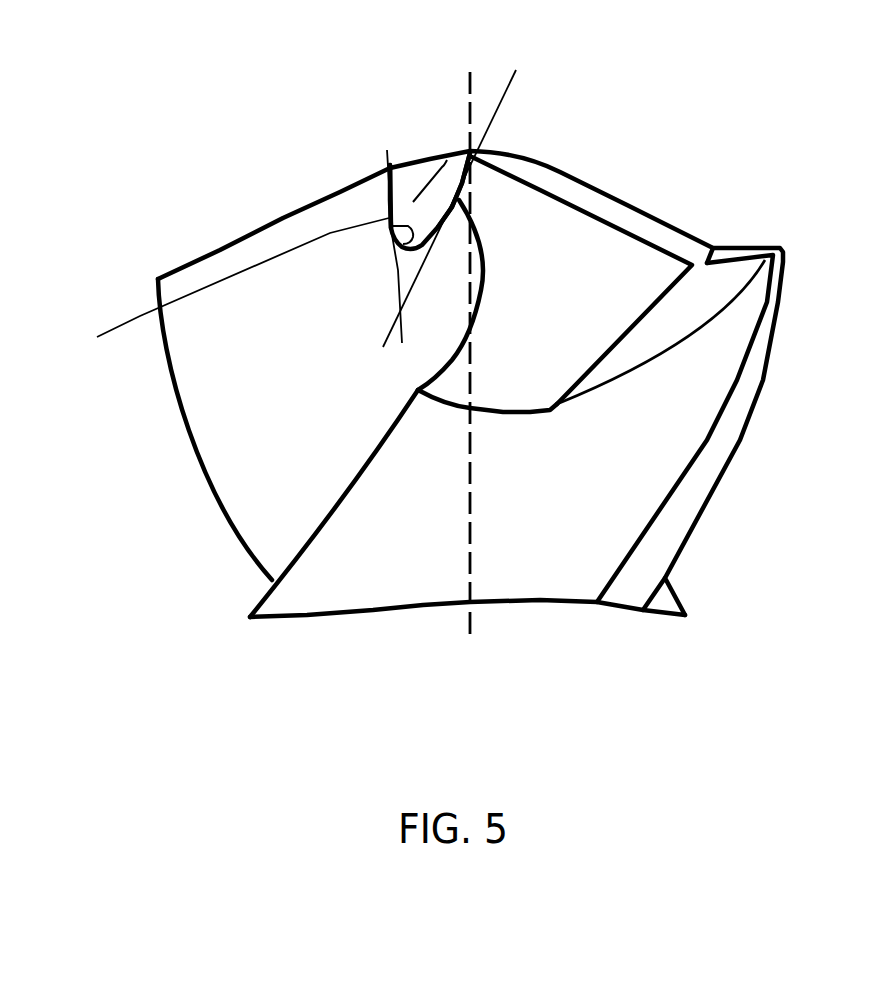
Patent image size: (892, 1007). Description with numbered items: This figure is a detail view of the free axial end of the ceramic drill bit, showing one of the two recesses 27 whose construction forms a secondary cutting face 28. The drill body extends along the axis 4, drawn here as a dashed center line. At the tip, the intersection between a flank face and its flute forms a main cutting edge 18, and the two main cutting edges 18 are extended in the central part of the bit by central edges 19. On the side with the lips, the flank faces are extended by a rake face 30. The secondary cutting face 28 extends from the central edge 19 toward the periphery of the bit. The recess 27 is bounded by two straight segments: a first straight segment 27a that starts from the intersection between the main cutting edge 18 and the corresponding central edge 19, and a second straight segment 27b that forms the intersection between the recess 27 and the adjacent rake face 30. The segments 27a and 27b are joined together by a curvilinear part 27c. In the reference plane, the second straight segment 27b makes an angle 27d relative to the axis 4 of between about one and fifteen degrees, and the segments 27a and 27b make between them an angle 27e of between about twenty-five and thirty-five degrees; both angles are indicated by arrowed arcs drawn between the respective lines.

The axis 4 is at (472, 620).
The main cutting edge 18 is at (283, 218).
The central edge 19 is at (420, 155).
The recess 27 is at (458, 183).
The first straight segment 27a is at (388, 203).
The second straight segment 27b is at (470, 212).
The curvilinear part 27c is at (220, 292).
The angle 27d is at (520, 119).
The angle 27e is at (433, 285).
The secondary cutting face 28 is at (471, 202).
The rake face 30 is at (563, 268).